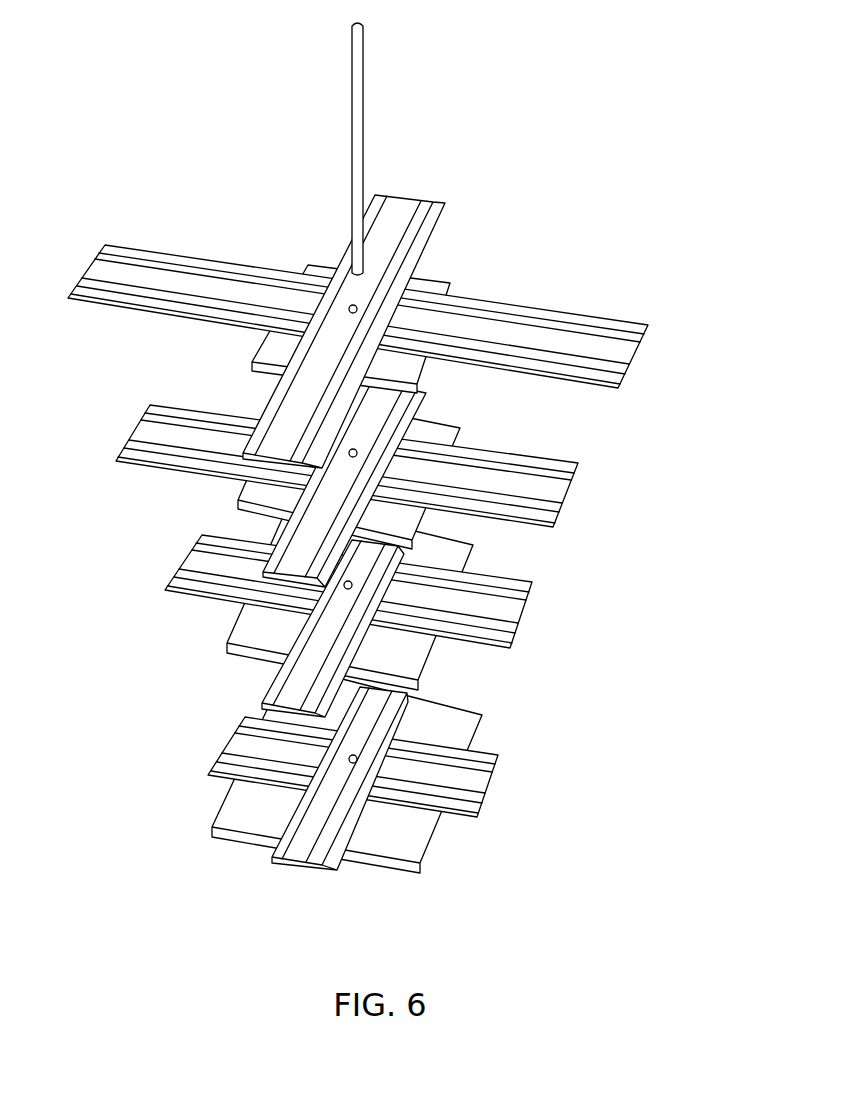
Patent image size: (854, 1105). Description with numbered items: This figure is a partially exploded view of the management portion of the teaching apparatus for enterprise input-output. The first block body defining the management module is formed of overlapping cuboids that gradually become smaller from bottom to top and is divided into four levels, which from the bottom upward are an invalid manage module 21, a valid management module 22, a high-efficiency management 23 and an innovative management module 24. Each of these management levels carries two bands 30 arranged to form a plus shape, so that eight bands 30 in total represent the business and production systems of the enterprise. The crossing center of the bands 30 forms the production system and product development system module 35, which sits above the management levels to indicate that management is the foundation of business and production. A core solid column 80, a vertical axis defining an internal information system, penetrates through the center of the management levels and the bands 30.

The invalid manage module 21 is at (448, 727).
The valid management module 22 is at (440, 551).
The high-efficiency management 23 is at (432, 432).
The innovative management module 24 is at (358, 327).
The bands 30 is at (393, 538).
The production system and product development system module 35 is at (352, 297).
The core solid column 80 is at (362, 103).